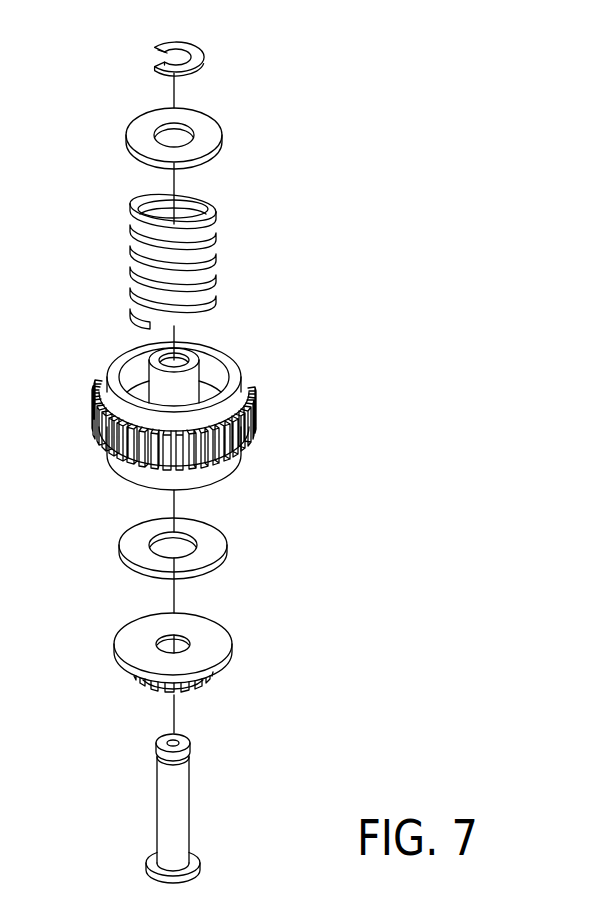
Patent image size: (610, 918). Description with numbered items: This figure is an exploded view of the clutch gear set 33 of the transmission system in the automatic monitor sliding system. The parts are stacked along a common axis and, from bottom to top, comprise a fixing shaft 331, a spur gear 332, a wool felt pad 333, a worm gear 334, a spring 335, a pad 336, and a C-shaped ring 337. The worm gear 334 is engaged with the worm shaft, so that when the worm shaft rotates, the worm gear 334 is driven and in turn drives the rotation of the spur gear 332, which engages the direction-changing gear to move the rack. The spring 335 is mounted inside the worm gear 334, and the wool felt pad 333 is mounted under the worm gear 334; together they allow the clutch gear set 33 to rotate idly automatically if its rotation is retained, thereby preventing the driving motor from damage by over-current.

The clutch gear set 33 is at (436, 433).
The fixing shaft 331 is at (176, 797).
The spur gear 332 is at (212, 641).
The wool felt pad 333 is at (221, 541).
The worm gear 334 is at (252, 420).
The spring 335 is at (215, 262).
The pad 336 is at (216, 133).
The C-shaped ring 337 is at (204, 55).